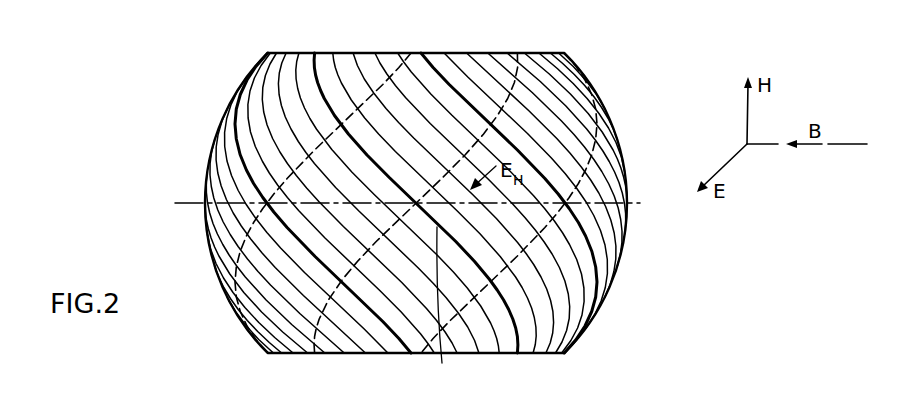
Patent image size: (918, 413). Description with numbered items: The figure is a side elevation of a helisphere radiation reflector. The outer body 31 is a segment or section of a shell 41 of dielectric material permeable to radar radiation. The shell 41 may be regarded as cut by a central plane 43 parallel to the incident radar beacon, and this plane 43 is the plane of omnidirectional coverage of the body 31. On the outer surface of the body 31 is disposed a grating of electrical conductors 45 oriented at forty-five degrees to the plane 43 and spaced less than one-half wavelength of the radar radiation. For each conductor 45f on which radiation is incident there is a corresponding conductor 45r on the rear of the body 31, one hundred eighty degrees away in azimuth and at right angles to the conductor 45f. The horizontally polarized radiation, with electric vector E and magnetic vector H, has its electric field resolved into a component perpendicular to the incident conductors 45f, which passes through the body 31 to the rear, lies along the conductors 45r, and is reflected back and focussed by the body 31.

The outer body 31 is at (661, 166).
The shell 41 is at (556, 53).
The central plane 43 is at (641, 207).
The grating of electrical conductors 45 is at (558, 88).
The rear conductor 45r is at (450, 167).
The incident conductor 45f is at (423, 304).